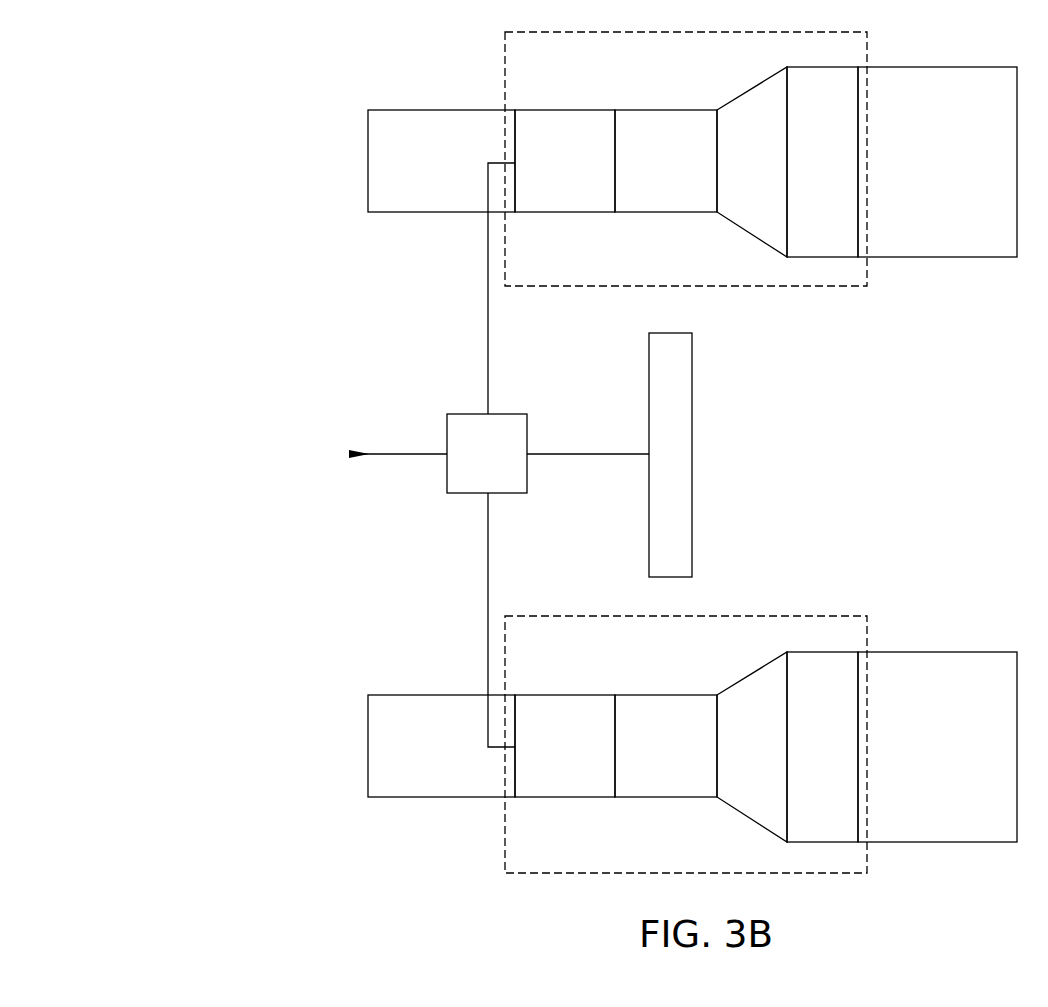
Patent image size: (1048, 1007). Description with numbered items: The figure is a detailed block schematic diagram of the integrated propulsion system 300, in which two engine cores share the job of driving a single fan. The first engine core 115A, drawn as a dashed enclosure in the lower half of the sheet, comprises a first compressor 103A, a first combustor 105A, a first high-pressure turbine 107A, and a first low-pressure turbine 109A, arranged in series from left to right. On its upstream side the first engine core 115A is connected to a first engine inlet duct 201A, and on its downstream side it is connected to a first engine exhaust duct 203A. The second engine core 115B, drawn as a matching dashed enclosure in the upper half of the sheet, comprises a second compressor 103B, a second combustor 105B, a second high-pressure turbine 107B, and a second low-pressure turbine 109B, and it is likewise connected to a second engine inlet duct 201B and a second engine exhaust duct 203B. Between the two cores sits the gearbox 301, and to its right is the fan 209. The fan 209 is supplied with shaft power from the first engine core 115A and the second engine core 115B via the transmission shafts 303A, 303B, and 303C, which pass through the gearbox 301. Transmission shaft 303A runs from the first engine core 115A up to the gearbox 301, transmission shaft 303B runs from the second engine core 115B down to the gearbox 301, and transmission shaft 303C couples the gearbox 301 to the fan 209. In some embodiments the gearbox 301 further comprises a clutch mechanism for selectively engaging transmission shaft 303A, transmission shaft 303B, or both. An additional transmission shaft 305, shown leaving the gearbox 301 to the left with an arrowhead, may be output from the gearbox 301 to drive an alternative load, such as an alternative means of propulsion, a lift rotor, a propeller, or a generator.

The integrated propulsion system 300 is at (192, 88).
The second engine core 115B is at (868, 44).
The first engine core 115A is at (868, 628).
The second engine inlet duct 201B is at (441, 161).
The first engine inlet duct 201A is at (441, 746).
The second compressor 103B is at (565, 161).
The first compressor 103A is at (565, 746).
The second combustor 105B is at (666, 161).
The first combustor 105A is at (666, 746).
The second high-pressure turbine 107B is at (752, 162).
The first high-pressure turbine 107A is at (752, 747).
The second low-pressure turbine 109B is at (822, 162).
The first low-pressure turbine 109A is at (822, 747).
The second engine exhaust duct 203B is at (937, 162).
The first engine exhaust duct 203A is at (937, 747).
The gearbox 301 is at (487, 453).
The fan 209 is at (670, 455).
The transmission shaft 303B is at (488, 324).
The transmission shaft 303A is at (488, 548).
The transmission shaft 303C is at (588, 453).
The additional transmission shaft 305 is at (402, 453).